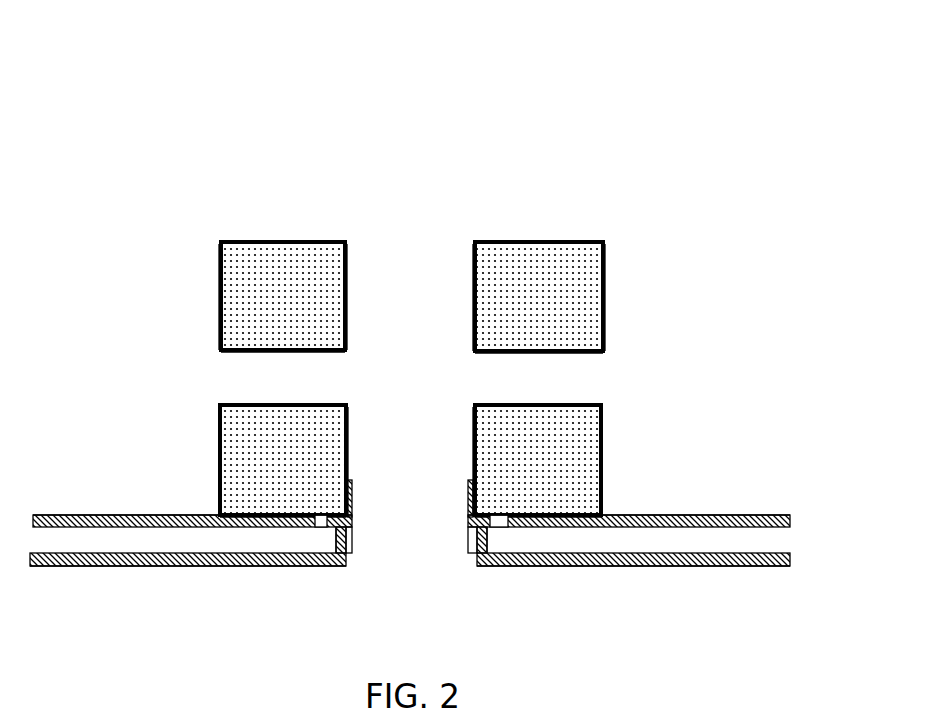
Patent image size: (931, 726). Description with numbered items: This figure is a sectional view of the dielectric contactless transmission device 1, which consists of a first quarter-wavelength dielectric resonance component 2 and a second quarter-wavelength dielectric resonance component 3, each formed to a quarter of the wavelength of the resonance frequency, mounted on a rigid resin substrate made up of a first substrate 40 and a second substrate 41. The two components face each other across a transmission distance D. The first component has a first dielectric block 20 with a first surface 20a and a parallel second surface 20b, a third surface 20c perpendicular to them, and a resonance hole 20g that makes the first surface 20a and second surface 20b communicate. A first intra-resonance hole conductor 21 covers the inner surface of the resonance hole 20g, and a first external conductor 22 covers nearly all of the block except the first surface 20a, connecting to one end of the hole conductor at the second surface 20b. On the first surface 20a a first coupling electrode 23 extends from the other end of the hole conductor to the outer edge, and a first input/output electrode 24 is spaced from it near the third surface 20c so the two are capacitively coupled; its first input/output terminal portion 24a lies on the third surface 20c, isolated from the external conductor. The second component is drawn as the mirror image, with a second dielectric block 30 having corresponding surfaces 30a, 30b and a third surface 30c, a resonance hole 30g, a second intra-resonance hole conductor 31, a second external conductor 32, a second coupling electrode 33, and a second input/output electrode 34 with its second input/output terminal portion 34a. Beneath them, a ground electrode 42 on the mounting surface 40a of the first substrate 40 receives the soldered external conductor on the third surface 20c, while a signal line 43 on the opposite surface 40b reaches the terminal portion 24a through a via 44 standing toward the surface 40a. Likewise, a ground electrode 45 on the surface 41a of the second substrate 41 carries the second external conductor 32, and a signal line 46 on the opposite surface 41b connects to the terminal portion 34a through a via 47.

The dielectric contactless transmission device 1 is at (408, 160).
The first quarter wavelength dielectric resonance component 2 is at (268, 228).
The second quarter wavelength dielectric resonance component 3 is at (528, 228).
The first dielectric block 20 is at (233, 240).
The first surface 20a is at (348, 257).
The second surface 20b is at (218, 327).
The third surface 20c is at (228, 530).
The resonance hole 20g is at (218, 380).
The first intra-resonance hole conductor 21 is at (257, 405).
The first external conductor 22 is at (218, 285).
The first coupling electrode 23 is at (349, 426).
The first input/output electrode 24 is at (350, 487).
The first input/output terminal portion 24a is at (352, 535).
The second dielectric block 30 is at (570, 262).
The side surface of second element body 30a is at (473, 265).
The bottom surface of second element body 30b is at (607, 337).
The third surface 30c is at (607, 531).
The gap of second component 30g is at (593, 380).
The second intra-resonance hole conductor 31 is at (540, 403).
The second external conductor 32 is at (607, 298).
The second coupling electrode 33 is at (472, 423).
The second input/output electrode 34 is at (470, 496).
The second input/output terminal portion 34a is at (468, 533).
The first substrate 40 is at (214, 551).
The surface of first substrate 40a is at (130, 540).
The opposite surface of first substrate 40b is at (193, 545).
The second substrate 41 is at (616, 552).
The surface of second substrate 41a is at (706, 538).
The opposite surface of second substrate 41b is at (672, 540).
The ground electrode 42 is at (75, 515).
The signal line 43 is at (56, 567).
The via 44 is at (333, 547).
The ground electrode 45 is at (777, 515).
The signal line 46 is at (772, 567).
The via 47 is at (502, 566).
The transmission distance D is at (472, 302).